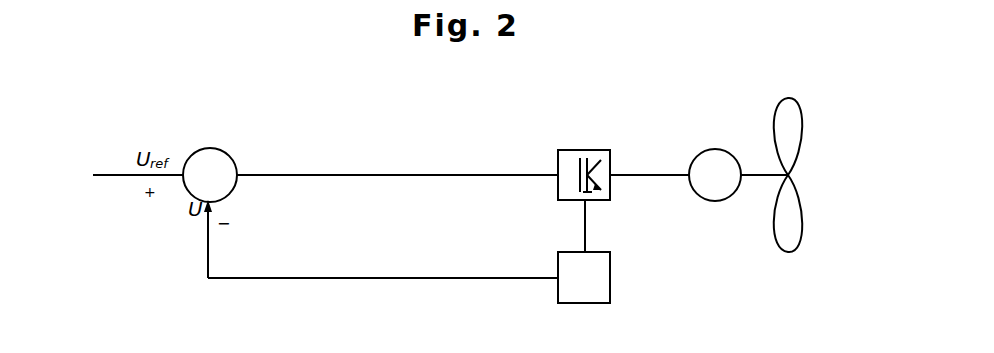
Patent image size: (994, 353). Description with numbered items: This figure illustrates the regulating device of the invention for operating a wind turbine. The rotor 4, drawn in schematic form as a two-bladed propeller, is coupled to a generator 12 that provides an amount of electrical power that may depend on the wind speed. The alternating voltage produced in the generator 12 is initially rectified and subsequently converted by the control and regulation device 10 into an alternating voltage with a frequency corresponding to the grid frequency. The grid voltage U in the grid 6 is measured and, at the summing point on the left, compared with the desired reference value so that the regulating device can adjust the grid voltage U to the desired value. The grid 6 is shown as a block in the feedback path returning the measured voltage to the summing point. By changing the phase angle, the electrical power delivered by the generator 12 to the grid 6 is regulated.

The rotor 4 is at (793, 254).
The grid 6 is at (590, 290).
The control and regulation device 10 is at (584, 161).
The generator 12 is at (703, 150).